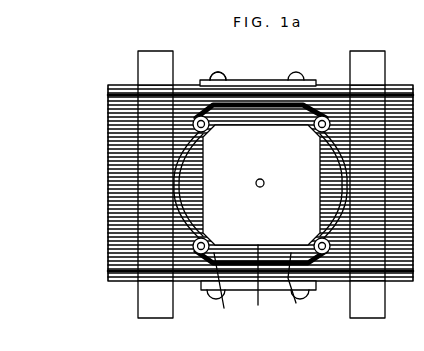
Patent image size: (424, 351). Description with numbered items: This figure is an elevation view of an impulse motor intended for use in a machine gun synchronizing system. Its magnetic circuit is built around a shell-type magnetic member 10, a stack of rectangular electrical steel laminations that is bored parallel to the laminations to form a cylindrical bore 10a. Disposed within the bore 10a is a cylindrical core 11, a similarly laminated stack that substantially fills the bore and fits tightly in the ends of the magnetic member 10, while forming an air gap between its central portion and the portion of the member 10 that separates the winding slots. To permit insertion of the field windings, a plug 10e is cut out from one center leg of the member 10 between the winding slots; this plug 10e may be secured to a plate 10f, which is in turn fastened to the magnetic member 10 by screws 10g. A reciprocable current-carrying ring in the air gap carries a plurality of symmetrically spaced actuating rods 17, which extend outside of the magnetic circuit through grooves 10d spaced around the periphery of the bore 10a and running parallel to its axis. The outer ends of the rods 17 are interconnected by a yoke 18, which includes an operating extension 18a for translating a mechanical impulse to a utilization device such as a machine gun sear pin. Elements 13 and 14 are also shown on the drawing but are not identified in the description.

The shell-type magnetic member 10 is at (106, 105).
The cylindrical bore 10a is at (226, 289).
The grooves 10d is at (181, 300).
The plug 10e is at (225, 100).
The plate 10f is at (277, 70).
The screws 10g is at (210, 67).
The cylindrical core 11 is at (295, 285).
The upper left terminal leg 13 is at (138, 52).
The upper right terminal leg 14 is at (372, 52).
The actuating rods 17 is at (164, 176).
The yoke 18 is at (190, 205).
The operating extension 18a is at (256, 173).